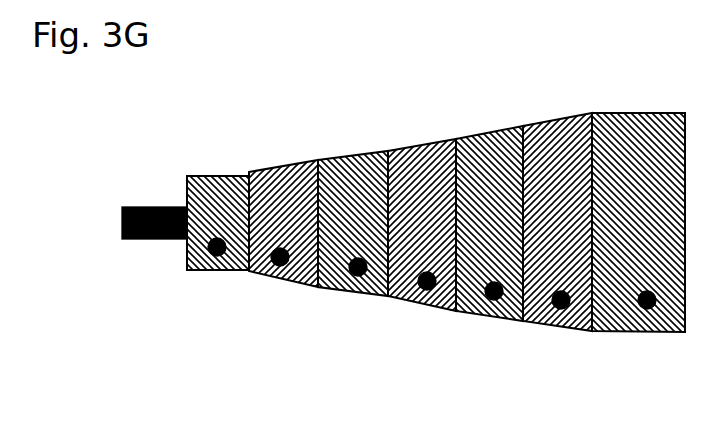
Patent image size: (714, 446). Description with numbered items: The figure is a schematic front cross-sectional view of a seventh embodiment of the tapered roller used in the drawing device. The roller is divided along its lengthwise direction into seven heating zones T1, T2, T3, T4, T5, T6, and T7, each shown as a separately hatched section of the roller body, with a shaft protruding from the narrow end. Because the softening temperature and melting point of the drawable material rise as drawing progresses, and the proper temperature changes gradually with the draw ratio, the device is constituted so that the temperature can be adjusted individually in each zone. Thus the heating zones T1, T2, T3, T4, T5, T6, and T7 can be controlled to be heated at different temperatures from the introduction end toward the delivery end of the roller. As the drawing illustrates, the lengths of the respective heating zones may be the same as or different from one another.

The heating zone T1 is at (212, 256).
The heating zone T2 is at (277, 265).
The heating zone T3 is at (354, 275).
The heating zone T4 is at (423, 289).
The heating zone T5 is at (490, 299).
The heating zone T6 is at (556, 308).
The heating zone T7 is at (644, 309).